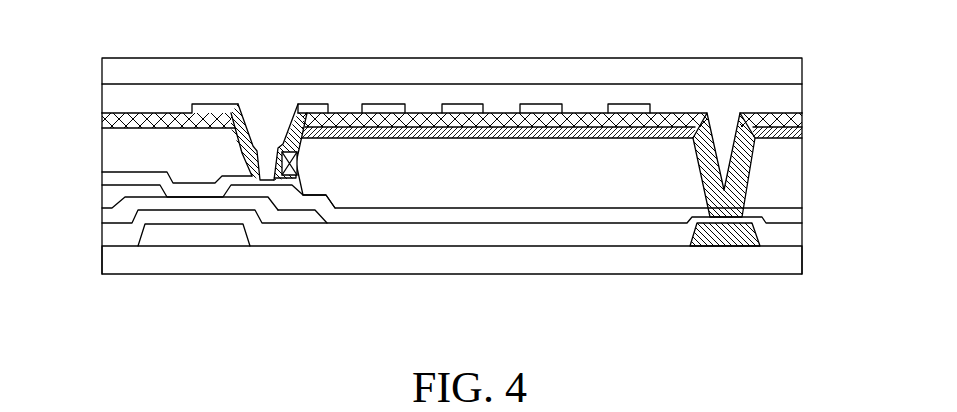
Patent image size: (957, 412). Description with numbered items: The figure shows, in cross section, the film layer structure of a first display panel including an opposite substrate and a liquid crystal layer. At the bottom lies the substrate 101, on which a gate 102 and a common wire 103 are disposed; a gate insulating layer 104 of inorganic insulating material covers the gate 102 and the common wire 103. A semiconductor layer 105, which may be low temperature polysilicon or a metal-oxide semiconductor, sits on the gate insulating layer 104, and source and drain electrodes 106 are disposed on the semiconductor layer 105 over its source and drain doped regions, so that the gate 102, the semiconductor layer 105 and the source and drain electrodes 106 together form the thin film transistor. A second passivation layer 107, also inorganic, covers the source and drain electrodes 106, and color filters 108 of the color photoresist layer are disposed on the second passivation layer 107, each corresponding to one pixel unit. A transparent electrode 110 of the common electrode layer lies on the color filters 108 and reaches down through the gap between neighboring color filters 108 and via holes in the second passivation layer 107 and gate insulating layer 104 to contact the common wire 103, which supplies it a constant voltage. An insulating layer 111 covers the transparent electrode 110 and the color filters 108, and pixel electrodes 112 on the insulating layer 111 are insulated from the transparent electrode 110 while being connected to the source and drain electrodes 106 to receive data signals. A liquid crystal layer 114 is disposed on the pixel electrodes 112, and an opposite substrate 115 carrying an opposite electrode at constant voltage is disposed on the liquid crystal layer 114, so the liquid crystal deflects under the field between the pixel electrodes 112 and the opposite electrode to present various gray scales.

The substrate 101 is at (802, 259).
The gate 102 is at (195, 240).
The common wire 103 is at (735, 247).
The gate insulating layer 104 is at (802, 234).
The semiconductor layer 105 is at (325, 218).
The source and drain electrodes 106 is at (112, 200).
The second passivation layer 107 is at (802, 217).
The color filter 108 is at (135, 163).
The transparent electrode 110 is at (682, 113).
The insulating layer 111 is at (767, 113).
The pixel electrode 112 is at (317, 104).
The liquid crystal layer 114 is at (802, 100).
The opposite substrate 115 is at (802, 70).